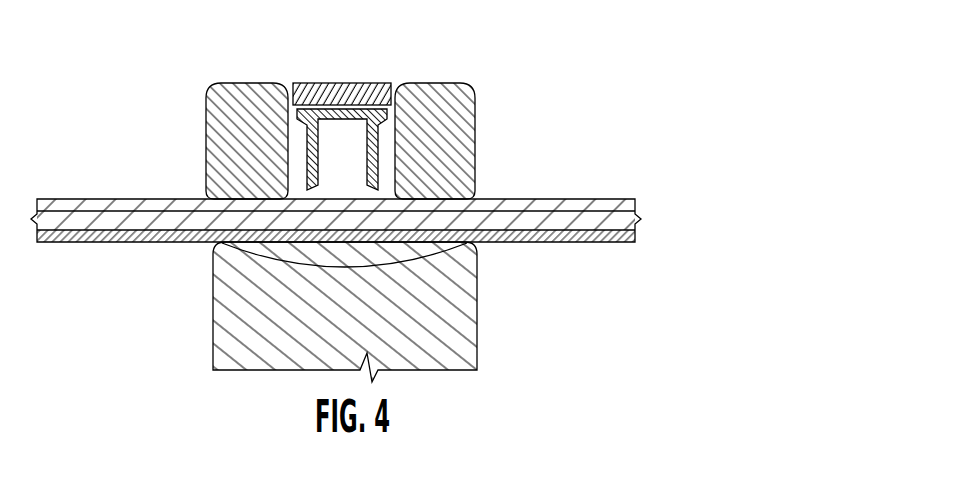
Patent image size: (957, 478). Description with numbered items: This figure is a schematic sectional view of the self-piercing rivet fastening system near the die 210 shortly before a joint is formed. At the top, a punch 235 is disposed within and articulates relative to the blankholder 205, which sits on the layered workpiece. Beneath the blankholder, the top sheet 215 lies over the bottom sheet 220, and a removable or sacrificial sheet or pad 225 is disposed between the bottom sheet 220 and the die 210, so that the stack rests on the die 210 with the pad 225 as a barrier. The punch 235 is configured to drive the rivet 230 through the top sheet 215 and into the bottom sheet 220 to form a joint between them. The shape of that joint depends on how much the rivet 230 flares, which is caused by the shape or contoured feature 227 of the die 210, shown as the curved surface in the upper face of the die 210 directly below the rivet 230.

The blankholder 205 is at (217, 78).
The punch 235 is at (370, 83).
The rivet 230 is at (377, 142).
The top sheet 215 is at (548, 208).
The bottom sheet 220 is at (545, 222).
The sacrificial sheet or pad 225 is at (127, 234).
The die 210 is at (257, 340).
The contoured feature 227 is at (385, 277).